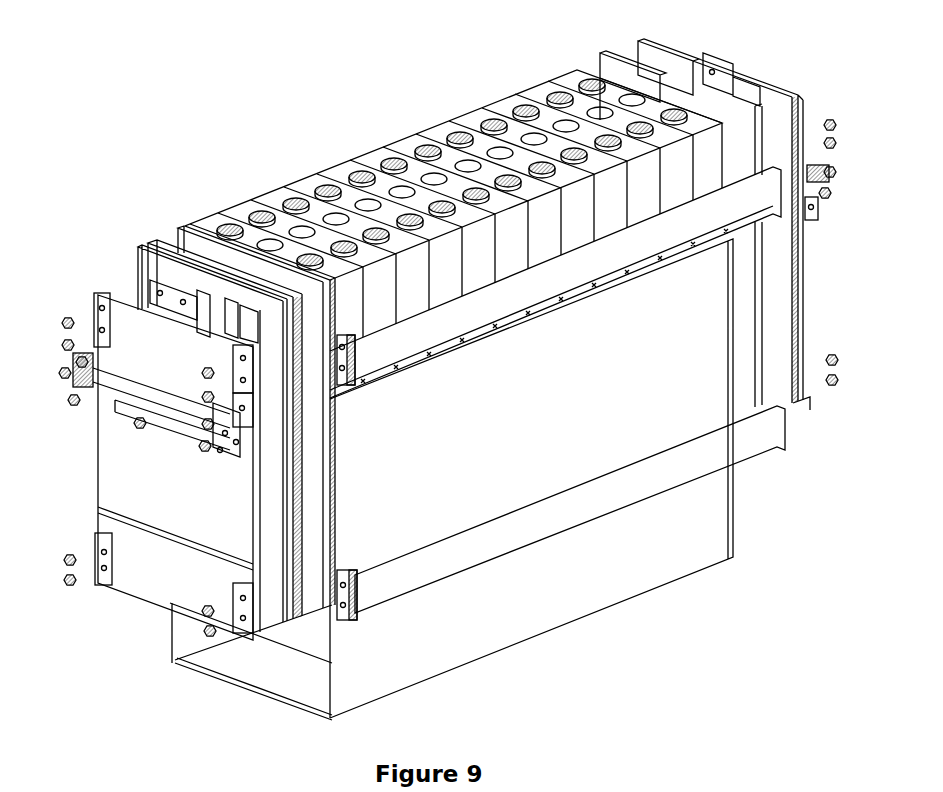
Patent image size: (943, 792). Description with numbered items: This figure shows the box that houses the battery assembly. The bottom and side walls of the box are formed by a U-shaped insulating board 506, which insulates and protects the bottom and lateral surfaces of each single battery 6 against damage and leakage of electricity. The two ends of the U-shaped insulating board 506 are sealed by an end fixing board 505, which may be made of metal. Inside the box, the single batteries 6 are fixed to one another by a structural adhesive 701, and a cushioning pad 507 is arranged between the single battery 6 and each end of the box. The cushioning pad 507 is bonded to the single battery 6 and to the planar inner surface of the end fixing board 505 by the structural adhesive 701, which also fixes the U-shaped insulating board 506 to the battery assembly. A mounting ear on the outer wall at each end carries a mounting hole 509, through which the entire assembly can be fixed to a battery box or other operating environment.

The single battery 6 is at (573, 72).
The structural adhesive 701 is at (182, 220).
The cushioning pad 507 is at (147, 243).
The end fixing board 505 is at (137, 493).
The mounting hole 509 is at (170, 432).
The U-shaped insulating board 506 is at (735, 545).